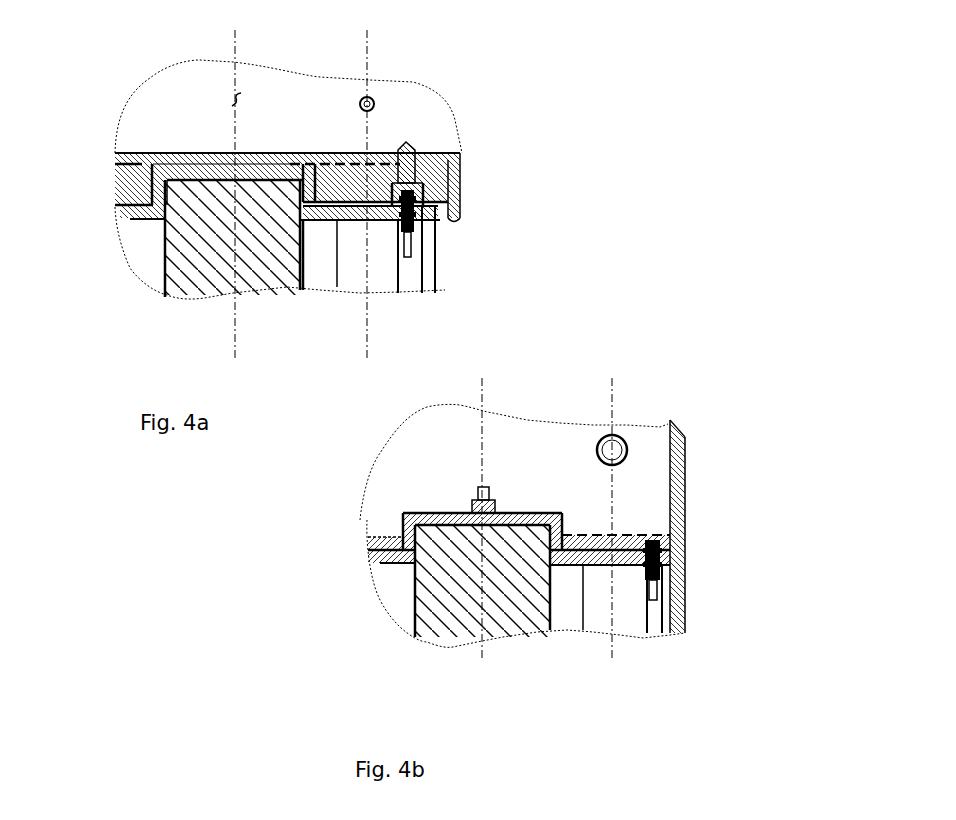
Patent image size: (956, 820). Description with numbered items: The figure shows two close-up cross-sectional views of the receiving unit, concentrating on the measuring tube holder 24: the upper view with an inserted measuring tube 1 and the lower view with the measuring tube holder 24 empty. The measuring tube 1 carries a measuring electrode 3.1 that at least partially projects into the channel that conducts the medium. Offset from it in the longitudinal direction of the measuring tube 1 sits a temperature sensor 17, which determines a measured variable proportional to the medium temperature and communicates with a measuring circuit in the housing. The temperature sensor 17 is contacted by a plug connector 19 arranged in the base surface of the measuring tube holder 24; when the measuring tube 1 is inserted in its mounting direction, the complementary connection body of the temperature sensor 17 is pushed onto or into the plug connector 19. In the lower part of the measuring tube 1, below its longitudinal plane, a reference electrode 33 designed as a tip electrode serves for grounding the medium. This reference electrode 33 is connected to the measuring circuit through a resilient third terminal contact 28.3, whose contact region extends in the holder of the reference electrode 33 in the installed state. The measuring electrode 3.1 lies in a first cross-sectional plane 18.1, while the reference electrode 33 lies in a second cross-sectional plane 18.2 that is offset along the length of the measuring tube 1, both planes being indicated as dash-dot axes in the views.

In FIG. 4A, the measuring tube 1 is at (118, 190).
In FIG. 4A, the measuring electrode 3.1 is at (228, 100).
In FIG. 4A, the temperature sensor 17 is at (373, 102).
In FIG. 4A, the first cross-sectional plane 18.1 is at (234, 208).
In FIG. 4B, the first cross-sectional plane 18.1 is at (484, 548).
In FIG. 4A, the second cross-sectional plane 18.2 is at (364, 208).
In FIG. 4B, the second cross-sectional plane 18.2 is at (611, 548).
In FIG. 4B, the plug connector 19 is at (617, 450).
In FIG. 4A, the measuring tube holder 24 is at (250, 55).
In FIG. 4A, the third terminal contact 28.3 is at (440, 203).
In FIG. 4A, the reference electrode 33 is at (418, 152).